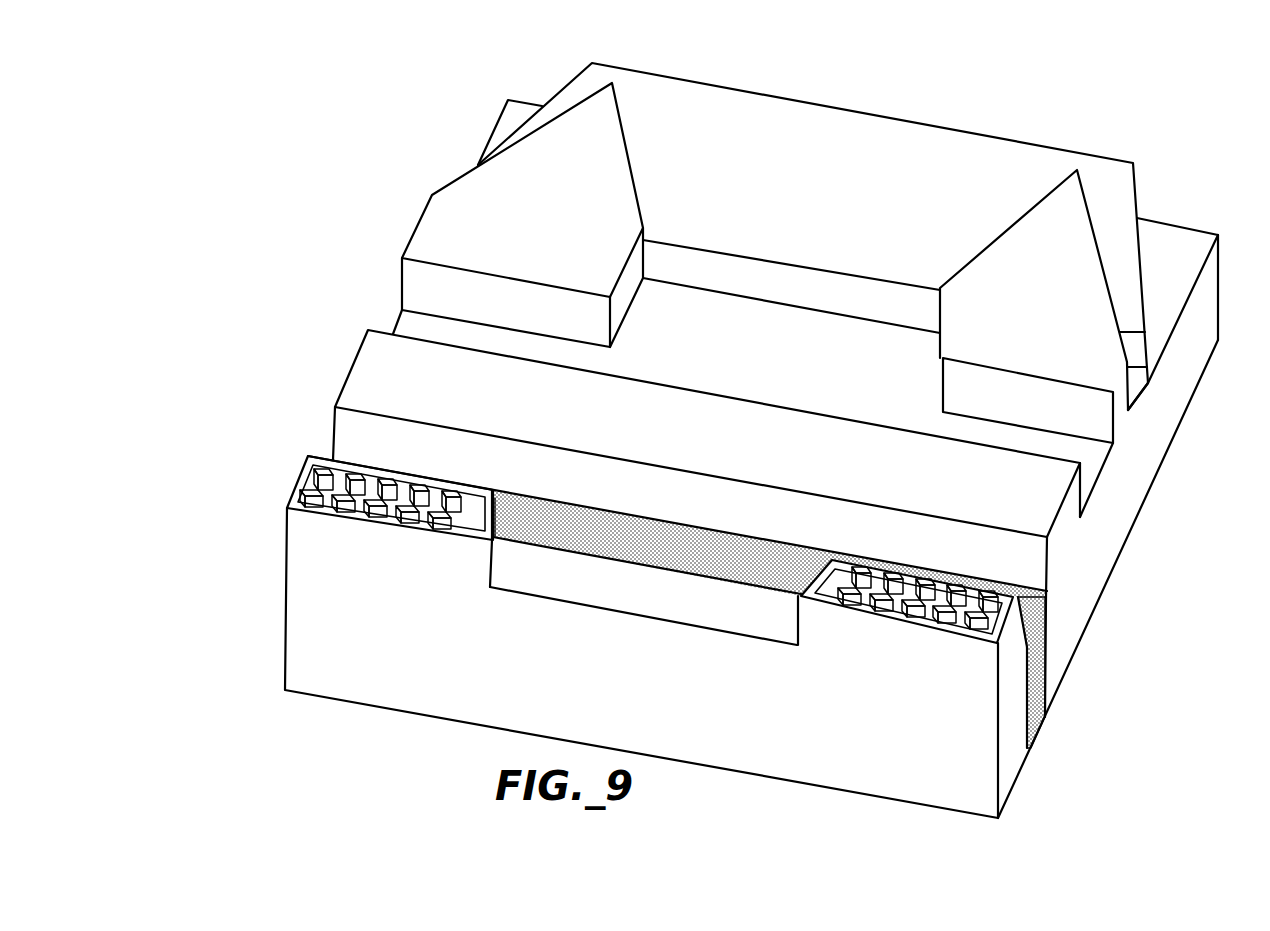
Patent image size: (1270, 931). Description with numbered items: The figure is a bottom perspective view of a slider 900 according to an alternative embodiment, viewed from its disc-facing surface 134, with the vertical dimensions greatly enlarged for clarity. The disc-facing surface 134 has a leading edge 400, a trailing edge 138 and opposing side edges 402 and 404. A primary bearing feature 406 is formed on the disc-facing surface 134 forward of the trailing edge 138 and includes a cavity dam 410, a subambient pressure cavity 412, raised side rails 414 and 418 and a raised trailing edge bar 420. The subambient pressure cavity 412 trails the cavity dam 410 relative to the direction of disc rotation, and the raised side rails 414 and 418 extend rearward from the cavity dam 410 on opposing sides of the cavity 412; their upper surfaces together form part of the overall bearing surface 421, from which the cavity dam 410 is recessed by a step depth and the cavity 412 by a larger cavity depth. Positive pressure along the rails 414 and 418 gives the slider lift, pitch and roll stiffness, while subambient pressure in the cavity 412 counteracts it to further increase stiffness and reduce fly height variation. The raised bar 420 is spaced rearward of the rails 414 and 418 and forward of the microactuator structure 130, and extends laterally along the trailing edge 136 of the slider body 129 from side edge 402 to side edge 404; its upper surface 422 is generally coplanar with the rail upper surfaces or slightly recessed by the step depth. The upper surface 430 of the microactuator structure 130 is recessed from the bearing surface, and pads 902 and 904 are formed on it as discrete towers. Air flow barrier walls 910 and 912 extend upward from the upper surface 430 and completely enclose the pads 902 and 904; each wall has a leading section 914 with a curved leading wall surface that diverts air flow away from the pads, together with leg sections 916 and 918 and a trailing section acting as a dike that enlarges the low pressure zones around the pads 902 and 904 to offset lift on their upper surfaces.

The slider 900 is at (432, 121).
The leading edge 400 is at (607, 60).
The side edge 404 is at (500, 107).
The cavity dam 410 is at (778, 110).
The disc-facing surface 134 is at (922, 138).
The bearing surface 421 is at (1076, 213).
The raised side rail 418 is at (425, 232).
The primary bearing feature 406 is at (394, 291).
The raised trailing edge bar 420 is at (352, 368).
The subambient pressure cavity 412 is at (721, 358).
The side edge 402 is at (1195, 302).
The upper surface 422 is at (658, 448).
The raised side rail 414 is at (1103, 373).
The slider body 129 is at (1120, 505).
The leading section 914 is at (343, 462).
The air flow barrier wall 912 is at (502, 536).
The leg section 916 is at (1032, 650).
The pads 904 is at (412, 517).
The leg section 918 is at (492, 547).
The upper surface 430 is at (631, 578).
The air flow barrier wall 910 is at (800, 587).
The trailing edge 138 is at (633, 620).
The pads 902 is at (943, 617).
The trailing edge 136 is at (1045, 618).
The microactuator structure 130 is at (1017, 740).